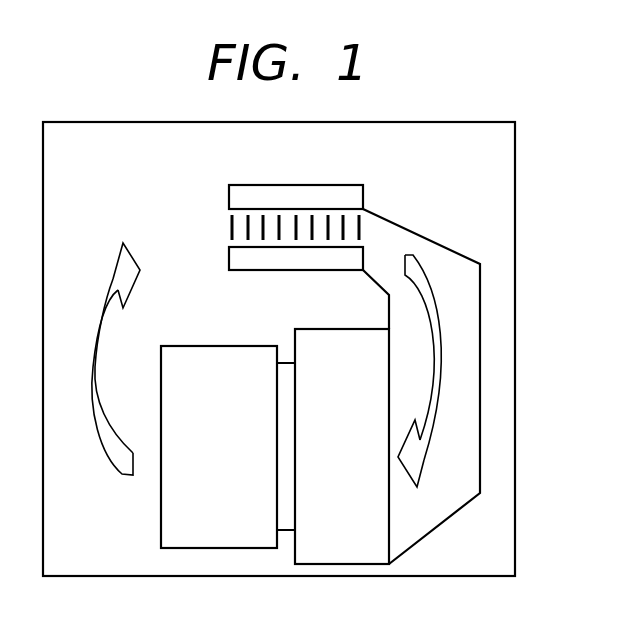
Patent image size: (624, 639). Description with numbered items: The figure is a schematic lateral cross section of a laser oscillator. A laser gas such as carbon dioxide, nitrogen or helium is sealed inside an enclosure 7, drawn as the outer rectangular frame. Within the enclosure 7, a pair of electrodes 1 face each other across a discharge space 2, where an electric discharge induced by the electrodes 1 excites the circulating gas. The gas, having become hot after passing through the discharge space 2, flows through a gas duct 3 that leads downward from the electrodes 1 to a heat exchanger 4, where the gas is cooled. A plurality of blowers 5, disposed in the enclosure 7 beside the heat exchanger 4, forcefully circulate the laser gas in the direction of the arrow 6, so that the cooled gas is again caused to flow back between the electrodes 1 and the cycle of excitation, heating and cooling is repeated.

The electrodes 1 is at (238, 197).
The discharge space 2 is at (288, 222).
The gas duct 3 is at (435, 247).
The heat exchanger 4 is at (298, 329).
The blowers 5 is at (170, 505).
The arrow 6 is at (112, 278).
The enclosure 7 is at (515, 322).